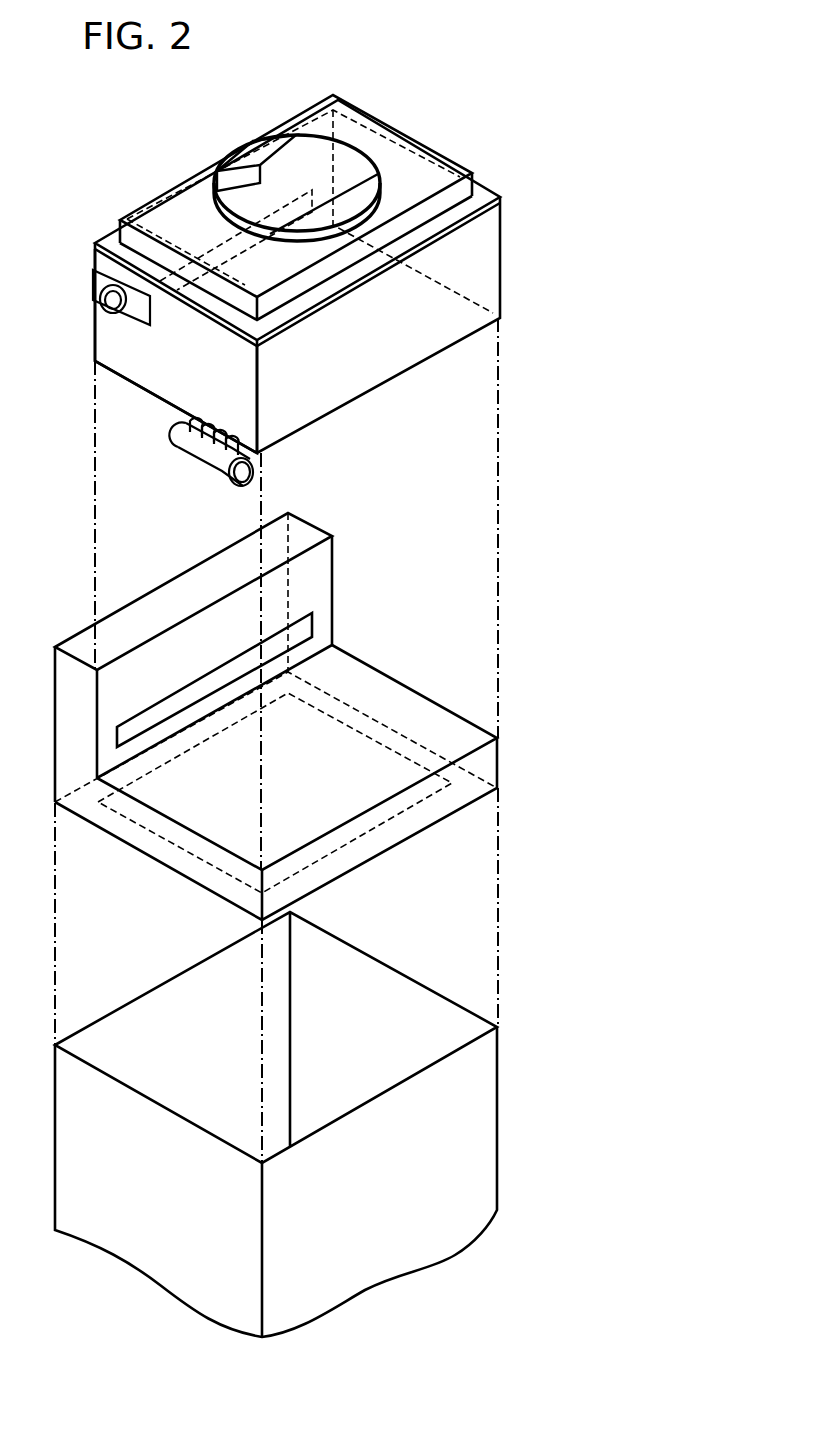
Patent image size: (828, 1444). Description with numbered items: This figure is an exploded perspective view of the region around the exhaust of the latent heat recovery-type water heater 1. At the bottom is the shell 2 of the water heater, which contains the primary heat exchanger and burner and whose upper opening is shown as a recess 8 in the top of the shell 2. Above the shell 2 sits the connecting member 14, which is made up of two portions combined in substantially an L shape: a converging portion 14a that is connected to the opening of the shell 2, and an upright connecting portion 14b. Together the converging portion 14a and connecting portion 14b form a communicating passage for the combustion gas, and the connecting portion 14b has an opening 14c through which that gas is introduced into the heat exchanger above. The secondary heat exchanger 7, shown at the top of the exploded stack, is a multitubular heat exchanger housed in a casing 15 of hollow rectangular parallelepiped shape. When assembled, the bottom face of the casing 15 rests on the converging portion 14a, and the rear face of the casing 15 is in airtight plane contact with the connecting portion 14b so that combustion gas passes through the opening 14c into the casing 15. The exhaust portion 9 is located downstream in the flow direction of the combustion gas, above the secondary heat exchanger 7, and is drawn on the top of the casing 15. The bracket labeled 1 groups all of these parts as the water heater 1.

The latent heat recovery-type water heater 1 is at (660, 1310).
The shell 2 is at (477, 1142).
The secondary heat exchanger 7 is at (483, 260).
The recess opening 8 is at (395, 1029).
The exhaust portion 9 is at (397, 158).
The connecting member 14 is at (606, 633).
The converging portion 14a is at (440, 727).
The connecting portion 14b is at (325, 640).
The opening 14c is at (178, 703).
The casing 15 is at (359, 363).